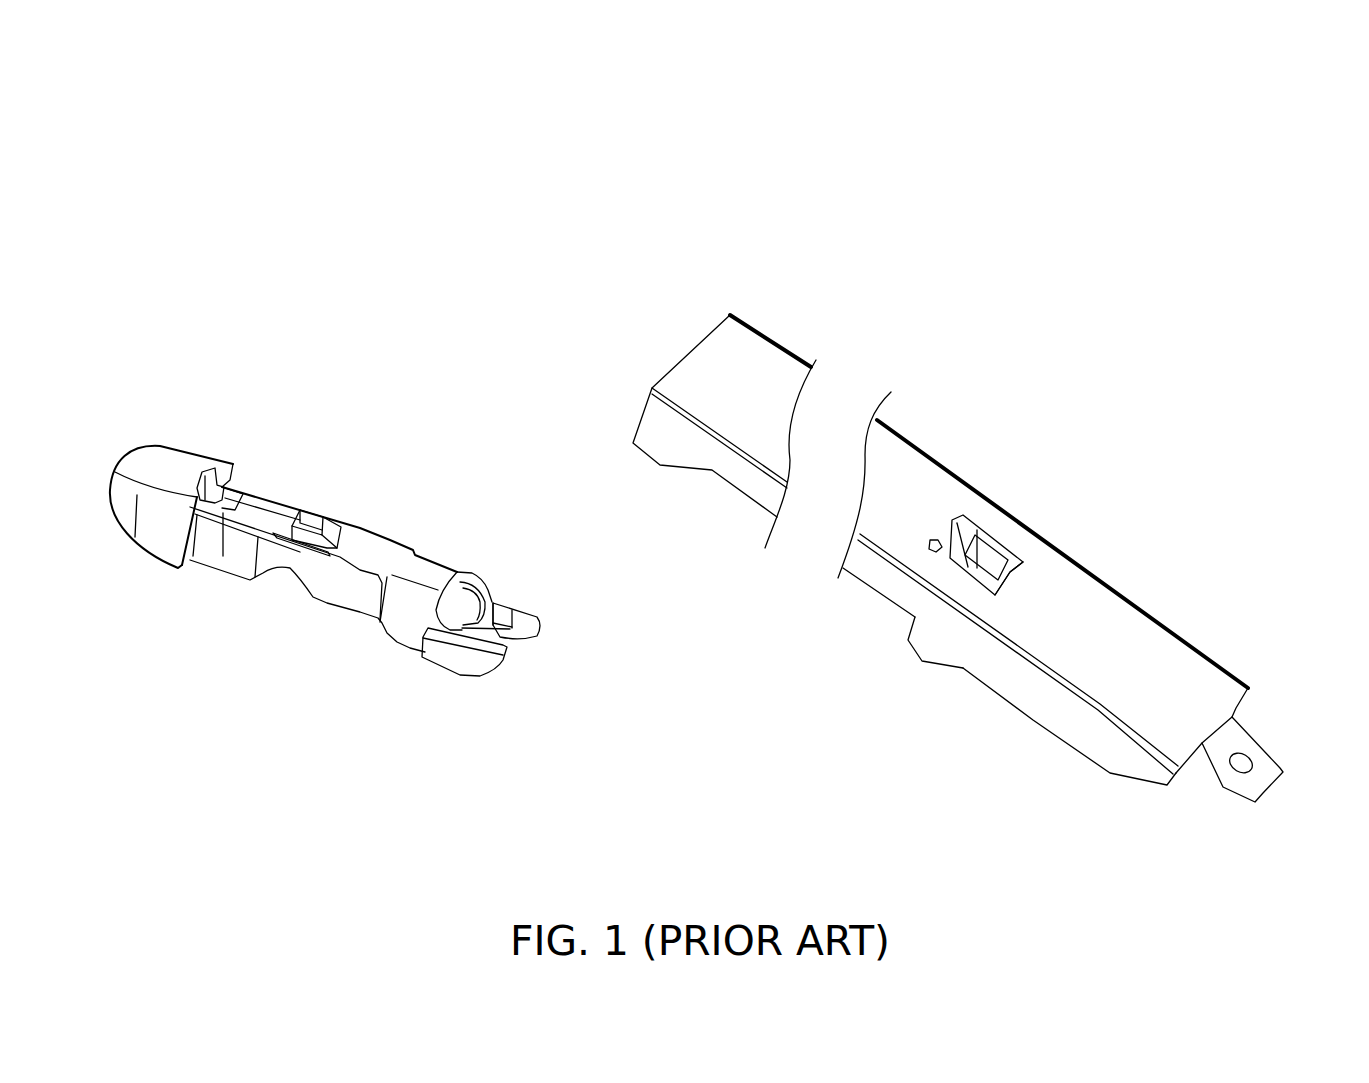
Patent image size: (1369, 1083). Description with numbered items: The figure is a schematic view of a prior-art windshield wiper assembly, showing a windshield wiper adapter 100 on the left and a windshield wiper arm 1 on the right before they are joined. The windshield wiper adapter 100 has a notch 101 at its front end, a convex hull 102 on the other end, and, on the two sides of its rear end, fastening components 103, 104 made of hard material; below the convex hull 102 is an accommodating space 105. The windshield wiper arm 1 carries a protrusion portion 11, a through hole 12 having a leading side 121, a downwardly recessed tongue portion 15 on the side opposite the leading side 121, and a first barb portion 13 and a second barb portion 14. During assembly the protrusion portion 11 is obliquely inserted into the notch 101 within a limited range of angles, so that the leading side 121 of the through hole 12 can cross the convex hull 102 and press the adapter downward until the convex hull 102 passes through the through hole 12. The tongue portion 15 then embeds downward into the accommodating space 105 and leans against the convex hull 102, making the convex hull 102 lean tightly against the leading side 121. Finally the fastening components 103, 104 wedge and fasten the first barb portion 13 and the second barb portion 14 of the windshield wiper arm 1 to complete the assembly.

The windshield wiper arm 1 is at (650, 296).
The protrusion portion 11 is at (1275, 770).
The through hole 12 is at (967, 543).
The leading side 121 is at (1013, 582).
The first barb portion 13 is at (937, 640).
The second barb portion 14 is at (992, 570).
The tongue portion 15 is at (935, 545).
The windshield wiper adapter 100 is at (217, 418).
The notch 101 is at (232, 467).
The convex hull 102 is at (320, 523).
The fastening component 103 is at (465, 665).
The fastening component 104 is at (525, 628).
The accommodating space 105 is at (347, 527).